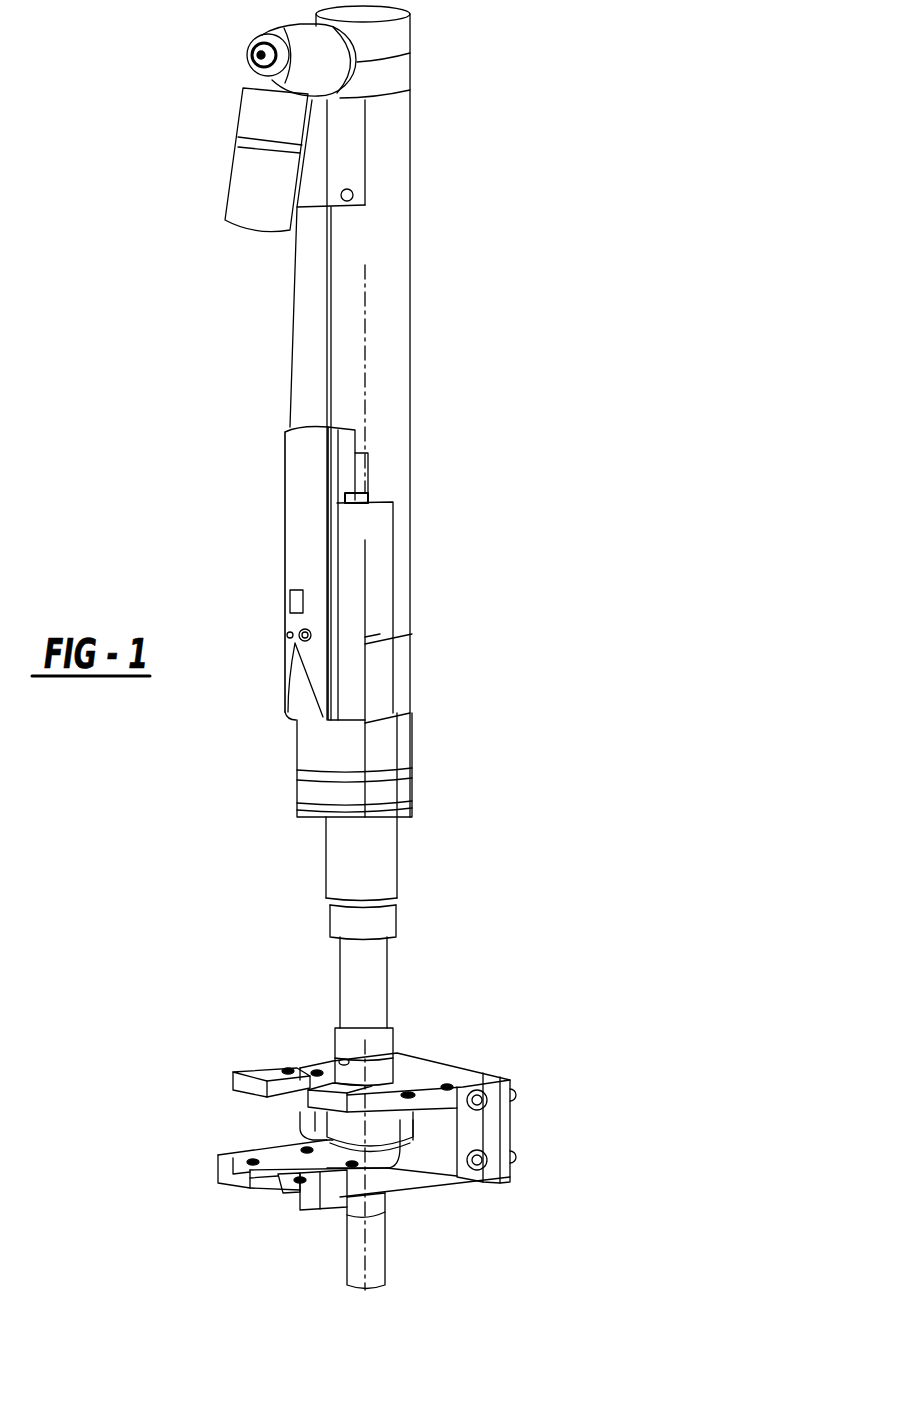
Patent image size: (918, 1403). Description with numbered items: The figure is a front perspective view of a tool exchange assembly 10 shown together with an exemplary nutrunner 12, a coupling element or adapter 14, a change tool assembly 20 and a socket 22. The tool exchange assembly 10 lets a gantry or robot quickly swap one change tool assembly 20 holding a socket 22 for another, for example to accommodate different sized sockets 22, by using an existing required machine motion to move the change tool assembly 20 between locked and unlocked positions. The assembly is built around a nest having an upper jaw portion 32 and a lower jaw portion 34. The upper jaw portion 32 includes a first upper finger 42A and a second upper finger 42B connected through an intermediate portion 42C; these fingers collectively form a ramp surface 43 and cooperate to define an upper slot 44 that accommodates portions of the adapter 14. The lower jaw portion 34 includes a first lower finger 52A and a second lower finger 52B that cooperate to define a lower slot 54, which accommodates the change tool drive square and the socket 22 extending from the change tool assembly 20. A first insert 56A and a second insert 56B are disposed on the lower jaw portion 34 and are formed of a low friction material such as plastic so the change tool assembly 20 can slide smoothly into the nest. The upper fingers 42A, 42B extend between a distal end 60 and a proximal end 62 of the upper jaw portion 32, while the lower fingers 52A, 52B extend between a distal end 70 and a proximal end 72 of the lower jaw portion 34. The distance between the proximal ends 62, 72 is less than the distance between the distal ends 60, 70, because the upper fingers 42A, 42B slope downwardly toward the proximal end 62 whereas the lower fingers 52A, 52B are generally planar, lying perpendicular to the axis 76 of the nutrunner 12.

The tool exchange assembly 10 is at (547, 1165).
The nutrunner 12 is at (437, 433).
The adapter 14 is at (406, 1033).
The change tool assembly 20 is at (386, 1137).
The socket 22 is at (341, 1243).
The upper jaw portion 32 is at (442, 1135).
The lower jaw portion 34 is at (402, 1192).
The first upper finger 42A is at (233, 1081).
The second upper finger 42B is at (276, 1073).
The intermediate portion 42C is at (425, 1080).
The ramp surface 43 is at (290, 1122).
The upper slot 44 is at (290, 1104).
The first lower finger 52A is at (220, 1178).
The second lower finger 52B is at (292, 1205).
The lower slot 54 is at (263, 1197).
The first insert 56A is at (234, 1167).
The second insert 56B is at (290, 1185).
The distal end 60 is at (242, 1066).
The proximal end 62 is at (288, 1064).
The distal end 70 is at (300, 1224).
The proximal end 72 is at (409, 1197).
The axis 76 is at (362, 883).